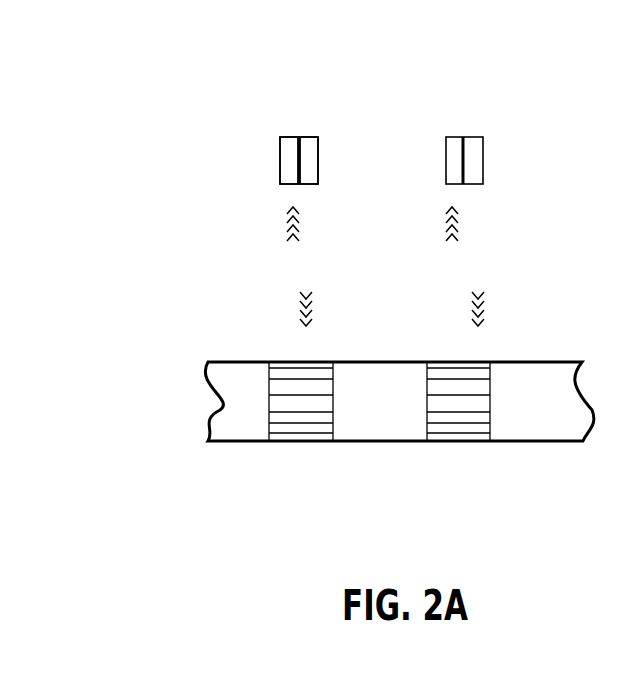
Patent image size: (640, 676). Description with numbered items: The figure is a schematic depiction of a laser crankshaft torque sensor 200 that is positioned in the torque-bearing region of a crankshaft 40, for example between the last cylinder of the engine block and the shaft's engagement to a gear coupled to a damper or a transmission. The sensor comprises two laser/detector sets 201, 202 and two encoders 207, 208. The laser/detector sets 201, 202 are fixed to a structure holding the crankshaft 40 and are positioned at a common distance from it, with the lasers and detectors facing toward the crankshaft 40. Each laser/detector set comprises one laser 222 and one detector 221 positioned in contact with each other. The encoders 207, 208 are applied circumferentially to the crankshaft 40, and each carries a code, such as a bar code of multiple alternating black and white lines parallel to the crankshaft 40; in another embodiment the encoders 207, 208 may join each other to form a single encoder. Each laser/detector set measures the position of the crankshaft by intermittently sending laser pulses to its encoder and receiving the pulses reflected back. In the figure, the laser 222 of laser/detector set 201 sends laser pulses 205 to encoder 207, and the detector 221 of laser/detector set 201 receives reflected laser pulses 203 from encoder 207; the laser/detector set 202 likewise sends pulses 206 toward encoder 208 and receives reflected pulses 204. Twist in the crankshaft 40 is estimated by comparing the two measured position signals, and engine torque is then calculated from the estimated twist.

The laser crankshaft torque sensor 200 is at (127, 177).
The laser/detector set 201 is at (302, 107).
The laser/detector set 202 is at (466, 107).
The detector 221 is at (280, 152).
The laser 222 is at (318, 150).
The reflected laser pulses 203 is at (300, 230).
The second emitted material stream 204 is at (458, 225).
The laser pulses 205 is at (312, 307).
The second deposited material flow 206 is at (485, 307).
The crankshaft 40 is at (552, 360).
The encoder 207 is at (333, 403).
The encoder 208 is at (490, 403).